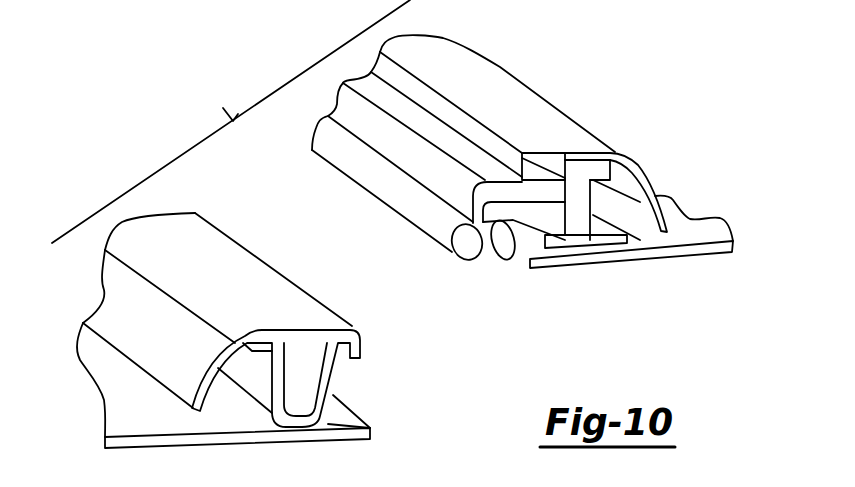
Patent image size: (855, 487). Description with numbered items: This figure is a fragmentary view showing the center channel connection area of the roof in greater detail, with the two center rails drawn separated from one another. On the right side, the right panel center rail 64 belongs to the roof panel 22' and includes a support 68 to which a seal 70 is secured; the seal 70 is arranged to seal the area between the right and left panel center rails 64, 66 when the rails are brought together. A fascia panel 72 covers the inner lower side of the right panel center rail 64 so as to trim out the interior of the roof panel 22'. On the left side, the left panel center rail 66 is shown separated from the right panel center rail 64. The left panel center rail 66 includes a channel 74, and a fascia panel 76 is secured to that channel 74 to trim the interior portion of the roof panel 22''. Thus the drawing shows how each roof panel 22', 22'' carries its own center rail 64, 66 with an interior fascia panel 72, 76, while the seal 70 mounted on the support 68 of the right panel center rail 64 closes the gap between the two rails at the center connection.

The right panel center rail 64 is at (551, 95).
The left panel center rail 66 is at (300, 273).
The support 68 is at (580, 233).
The seal 70 is at (352, 158).
The fascia panel 72 is at (499, 88).
The channel 74 is at (336, 374).
The fascia panel 76 is at (218, 245).
The roof panel 22' is at (627, 210).
The roof panel 22'' is at (223, 383).